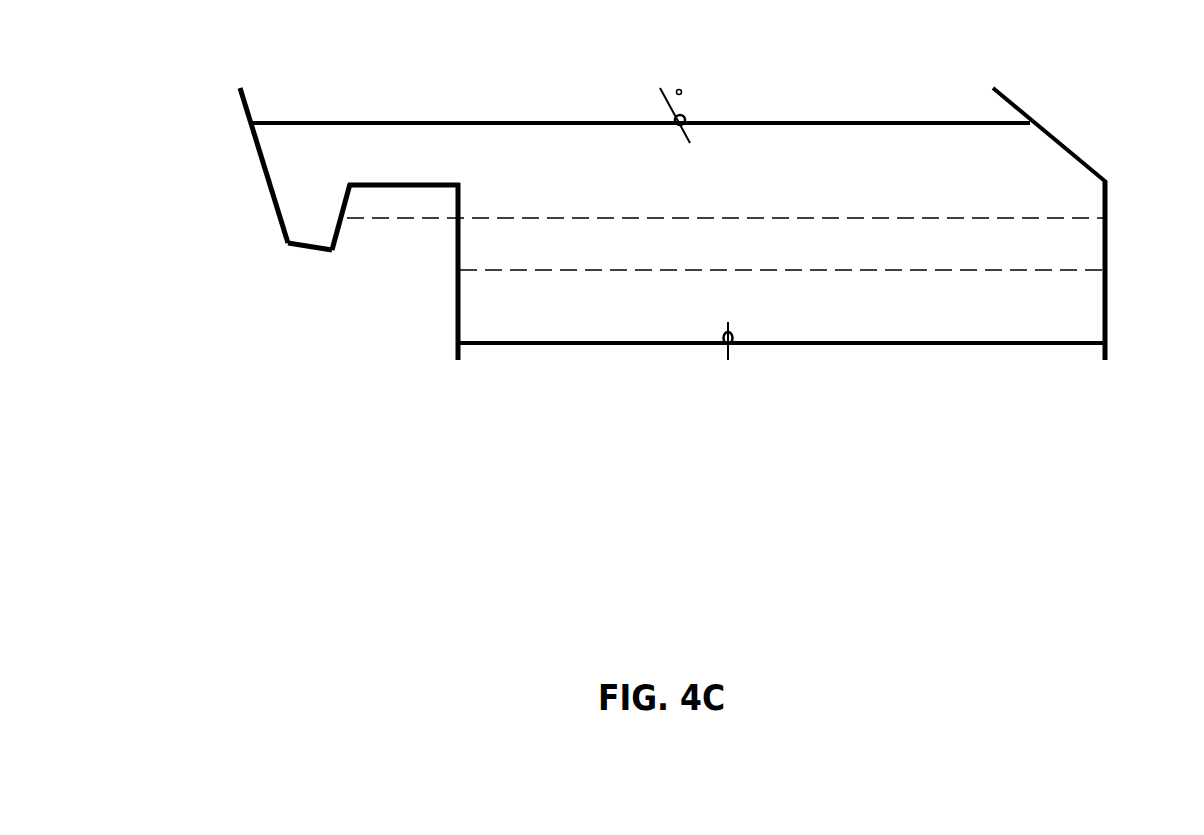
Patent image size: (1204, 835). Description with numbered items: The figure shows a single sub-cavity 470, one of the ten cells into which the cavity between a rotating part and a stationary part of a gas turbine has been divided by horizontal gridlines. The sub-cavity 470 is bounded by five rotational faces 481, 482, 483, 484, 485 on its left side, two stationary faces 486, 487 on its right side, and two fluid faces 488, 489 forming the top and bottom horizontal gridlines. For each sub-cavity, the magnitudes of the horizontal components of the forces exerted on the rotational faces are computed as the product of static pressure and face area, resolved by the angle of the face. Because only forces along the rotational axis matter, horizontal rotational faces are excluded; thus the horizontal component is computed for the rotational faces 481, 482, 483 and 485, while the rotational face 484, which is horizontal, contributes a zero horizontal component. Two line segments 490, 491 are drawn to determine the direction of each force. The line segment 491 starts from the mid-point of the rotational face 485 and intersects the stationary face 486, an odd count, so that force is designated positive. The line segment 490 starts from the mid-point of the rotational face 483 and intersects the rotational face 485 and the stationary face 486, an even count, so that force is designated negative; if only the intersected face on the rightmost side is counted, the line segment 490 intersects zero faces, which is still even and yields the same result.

The sub-cavity 470 is at (579, 194).
The rotational face 481 is at (258, 147).
The rotational face 482 is at (300, 248).
The rotational face 483 is at (332, 247).
The rotational face 484 is at (435, 190).
The rotational face 485 is at (457, 283).
The stationary face 486 is at (1110, 300).
The stationary face 487 is at (1070, 153).
The fluid face 488 is at (848, 123).
The fluid face 489 is at (923, 347).
The line segment 490 is at (860, 217).
The line segment 491 is at (908, 272).